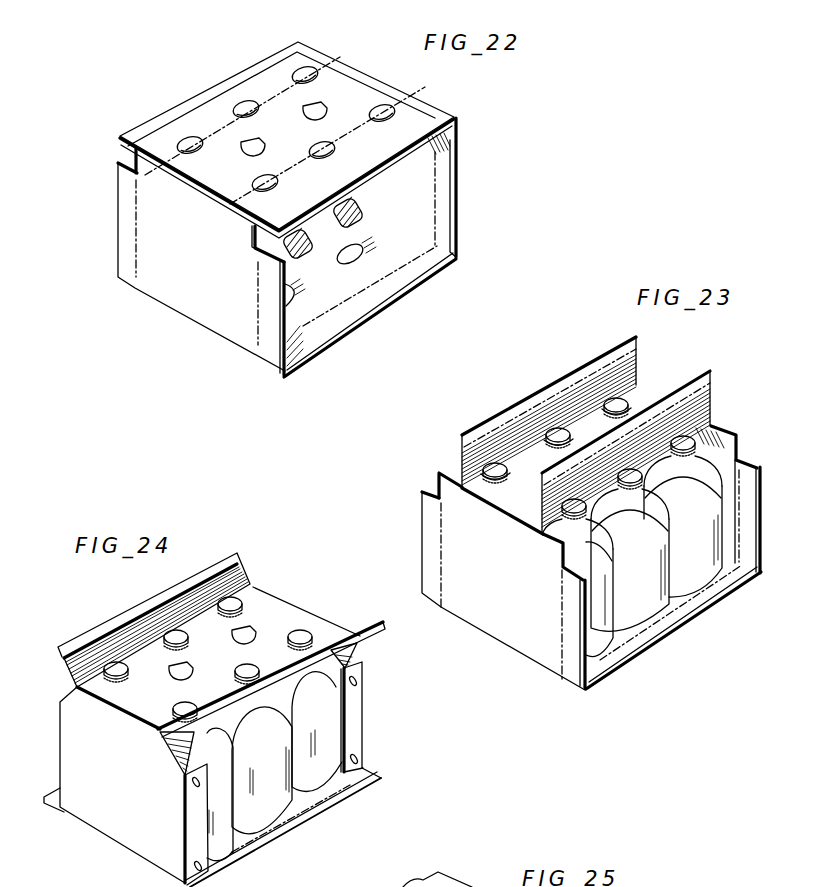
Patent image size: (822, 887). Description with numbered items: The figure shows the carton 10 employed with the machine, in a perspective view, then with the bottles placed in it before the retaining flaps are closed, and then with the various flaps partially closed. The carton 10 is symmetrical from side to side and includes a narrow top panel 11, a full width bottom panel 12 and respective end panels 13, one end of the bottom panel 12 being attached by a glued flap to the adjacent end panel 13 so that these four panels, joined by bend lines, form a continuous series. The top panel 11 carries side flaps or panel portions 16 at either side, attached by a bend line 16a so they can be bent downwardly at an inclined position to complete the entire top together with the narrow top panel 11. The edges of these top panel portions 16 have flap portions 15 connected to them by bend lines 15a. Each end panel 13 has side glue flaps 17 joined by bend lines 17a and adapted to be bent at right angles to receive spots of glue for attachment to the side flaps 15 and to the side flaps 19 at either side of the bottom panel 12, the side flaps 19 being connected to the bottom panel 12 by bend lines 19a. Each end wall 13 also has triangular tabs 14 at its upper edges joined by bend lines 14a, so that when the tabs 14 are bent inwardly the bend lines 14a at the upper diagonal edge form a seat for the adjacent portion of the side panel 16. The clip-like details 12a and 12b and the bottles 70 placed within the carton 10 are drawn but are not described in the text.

In FIG. 22, the carton 10 is at (163, 307).
In FIG. 23, the carton 10 is at (507, 650).
In FIG. 24, the carton 10 is at (297, 606).
In FIG. 25, the carton 10 is at (478, 883).
In FIG. 22, the top panel 11 is at (294, 141).
In FIG. 23, the top panel 11 is at (528, 498).
In FIG. 24, the top panel 11 is at (223, 660).
In FIG. 22, the bottom panel 12 is at (315, 273).
In FIG. 22, the clip tab 12a is at (358, 263).
In FIG. 22, the clip knob 12b is at (352, 224).
In FIG. 22, the end panel 13 is at (192, 268).
In FIG. 23, the end panel 13 is at (483, 590).
In FIG. 24, the end panel 13 is at (112, 790).
In FIG. 22, the triangular tab 14 is at (252, 232).
In FIG. 23, the triangular tab 14 is at (448, 476).
In FIG. 24, the triangular tab 14 is at (160, 746).
In FIG. 22, the bend line 14a is at (255, 224).
In FIG. 23, the bend line 14a is at (444, 491).
In FIG. 22, the flap portion 15 is at (205, 94).
In FIG. 23, the flap portion 15 is at (598, 366).
In FIG. 24, the flap portion 15 is at (235, 555).
In FIG. 22, the bend line 15a is at (264, 69).
In FIG. 23, the bend line 15a is at (561, 393).
In FIG. 24, the bend line 15a is at (157, 625).
In FIG. 22, the side flap 16 is at (275, 95).
In FIG. 23, the side flap 16 is at (522, 432).
In FIG. 24, the side flap 16 is at (241, 574).
In FIG. 22, the bend line 16a is at (205, 132).
In FIG. 22, the side glue flap 17 is at (128, 260).
In FIG. 23, the side glue flap 17 is at (425, 508).
In FIG. 24, the side glue flap 17 is at (197, 815).
In FIG. 22, the bend line 17a is at (137, 238).
In FIG. 23, the bend line 17a is at (440, 578).
In FIG. 24, the bend line 17a is at (432, 592).
In FIG. 22, the side flap 19 is at (374, 298).
In FIG. 23, the side flap 19 is at (671, 620).
In FIG. 24, the side flap 19 is at (50, 798).
In FIG. 22, the bend line 19a is at (396, 269).
In FIG. 23, the bend line 19a is at (698, 590).
In FIG. 24, the bend line 19a is at (251, 840).
In FIG. 23, the bottle 70 is at (636, 388).
In FIG. 24, the bottle 70 is at (225, 760).